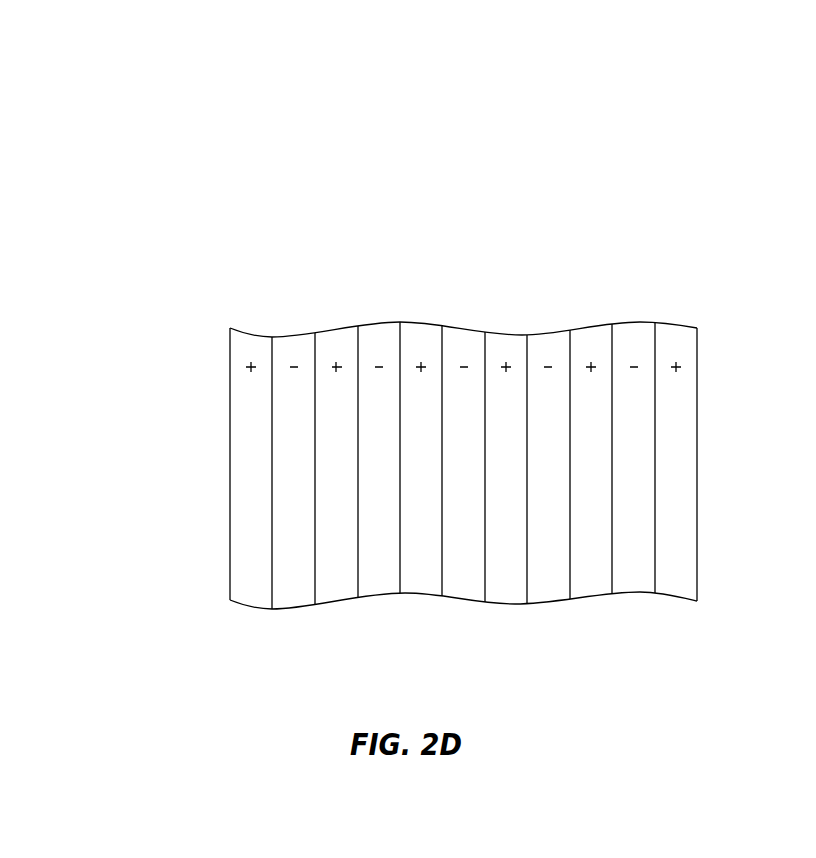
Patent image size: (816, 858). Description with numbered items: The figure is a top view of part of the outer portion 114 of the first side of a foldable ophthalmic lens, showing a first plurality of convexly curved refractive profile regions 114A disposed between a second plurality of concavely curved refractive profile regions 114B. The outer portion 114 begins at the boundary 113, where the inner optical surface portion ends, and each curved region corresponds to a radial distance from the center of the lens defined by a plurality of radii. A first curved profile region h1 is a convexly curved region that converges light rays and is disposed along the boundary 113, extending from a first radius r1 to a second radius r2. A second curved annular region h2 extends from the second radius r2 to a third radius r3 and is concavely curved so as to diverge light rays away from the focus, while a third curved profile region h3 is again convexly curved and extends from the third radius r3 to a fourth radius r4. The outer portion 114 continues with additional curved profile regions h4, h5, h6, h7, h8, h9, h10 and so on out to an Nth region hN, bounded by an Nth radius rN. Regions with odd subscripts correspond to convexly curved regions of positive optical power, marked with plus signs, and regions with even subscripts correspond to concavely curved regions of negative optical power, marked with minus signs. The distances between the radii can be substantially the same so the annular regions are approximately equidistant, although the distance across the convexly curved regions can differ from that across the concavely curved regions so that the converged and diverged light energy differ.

The boundary 113 is at (229, 512).
The outer portion 114 is at (200, 421).
The convexly curved refractive profile regions 114A is at (245, 607).
The concavely curved refractive profile regions 114B is at (297, 337).
The first radius r1 is at (231, 235).
The second radius r2 is at (274, 196).
The third radius r3 is at (317, 157).
The fourth radius r4 is at (359, 118).
The Nth radius rN is at (698, 78).
The first curved profile region h1 is at (251, 312).
The second curved annular region h2 is at (293, 622).
The third curved profile region h3 is at (335, 310).
The fourth curved profile region h4 is at (377, 622).
The fifth curved profile region h5 is at (422, 310).
The sixth curved profile region h6 is at (464, 624).
The seventh curved profile region h7 is at (503, 310).
The eighth curved profile region h8 is at (546, 624).
The ninth curved profile region h9 is at (591, 310).
The tenth curved profile region h10 is at (633, 624).
The Nth curved profile region hN is at (677, 310).